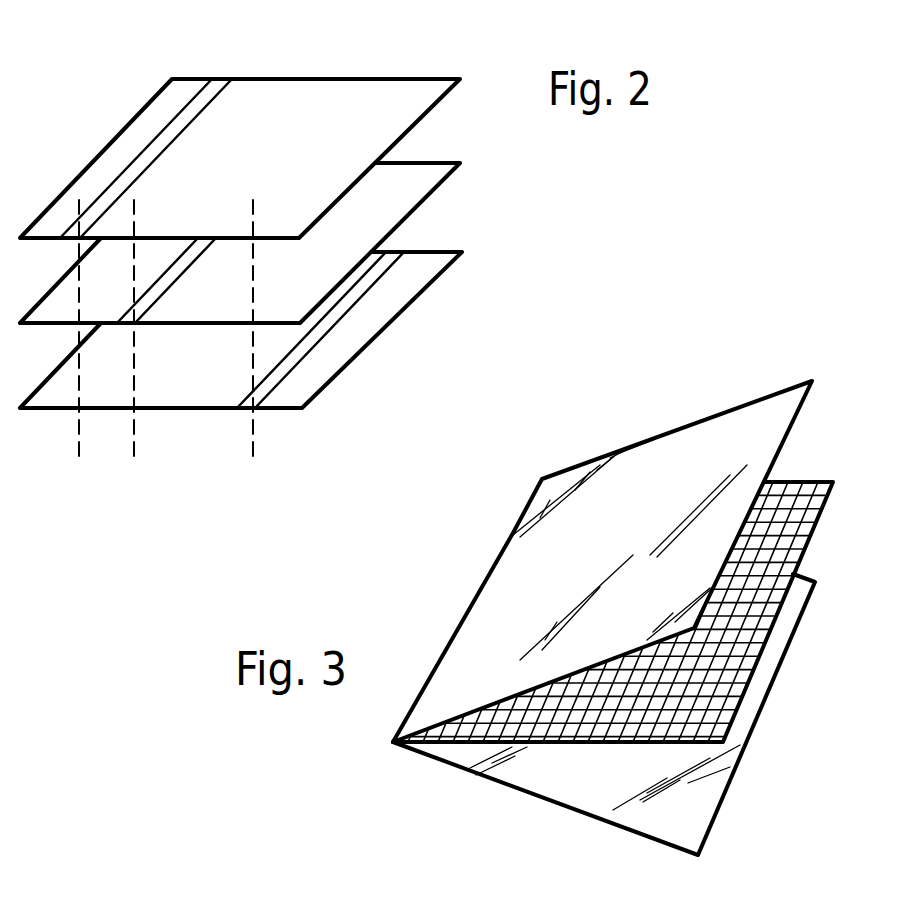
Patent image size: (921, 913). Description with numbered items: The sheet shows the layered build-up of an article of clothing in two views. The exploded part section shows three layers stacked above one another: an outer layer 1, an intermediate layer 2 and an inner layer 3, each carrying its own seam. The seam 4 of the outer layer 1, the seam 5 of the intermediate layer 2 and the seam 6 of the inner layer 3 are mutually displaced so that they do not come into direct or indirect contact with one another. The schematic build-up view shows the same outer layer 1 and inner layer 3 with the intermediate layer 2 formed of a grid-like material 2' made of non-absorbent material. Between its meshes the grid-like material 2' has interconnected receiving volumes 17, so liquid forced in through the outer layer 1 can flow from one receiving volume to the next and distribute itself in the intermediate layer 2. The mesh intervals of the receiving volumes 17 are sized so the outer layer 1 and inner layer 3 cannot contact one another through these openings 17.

In FIG. 2, the outer layer 1 is at (415, 86).
In FIG. 3, the outer layer 1 is at (737, 421).
In FIG. 2, the intermediate layer 2 is at (259, 213).
In FIG. 2, the inner layer 3 is at (440, 248).
In FIG. 3, the inner layer 3 is at (762, 704).
In FIG. 2, the seam of the outer layer 4 is at (197, 108).
In FIG. 2, the seam of the intermediate layer 5 is at (173, 276).
In FIG. 2, the seam of the inner layer 6 is at (323, 328).
In FIG. 3, the grid-like material 2' is at (618, 580).
In FIG. 3, the receiving volumes 17 is at (774, 579).